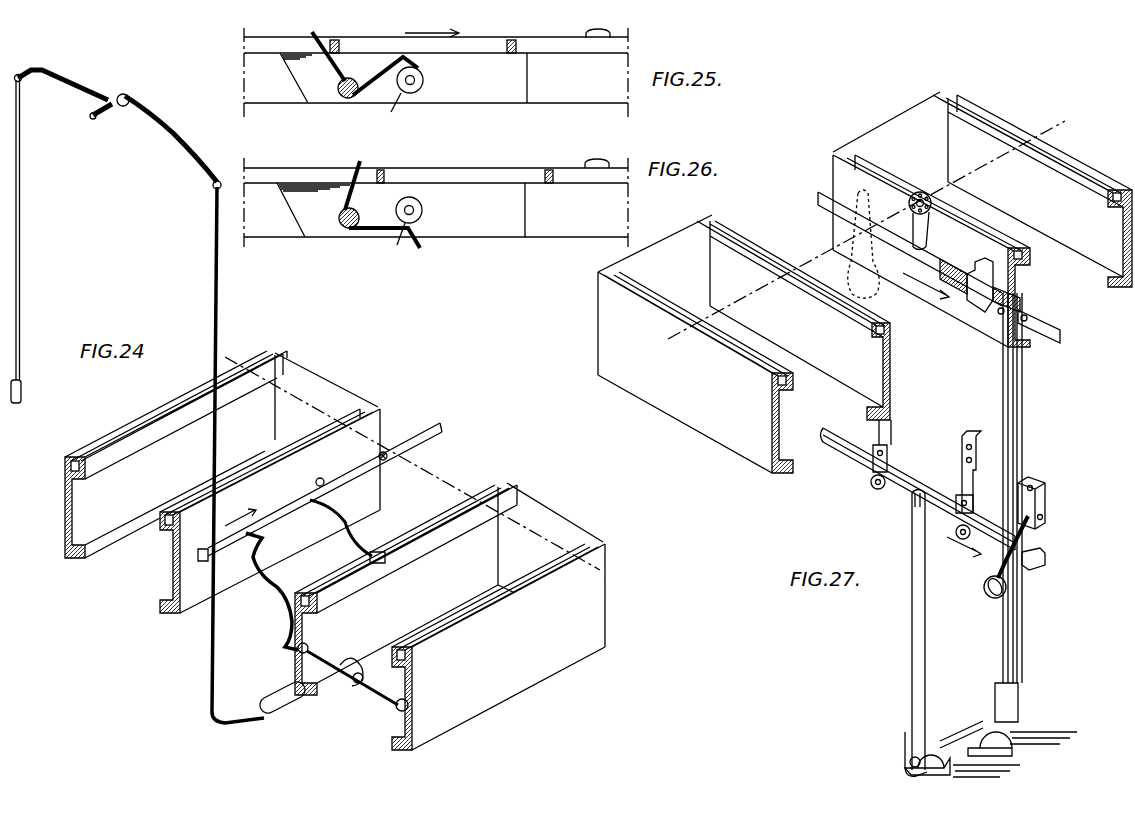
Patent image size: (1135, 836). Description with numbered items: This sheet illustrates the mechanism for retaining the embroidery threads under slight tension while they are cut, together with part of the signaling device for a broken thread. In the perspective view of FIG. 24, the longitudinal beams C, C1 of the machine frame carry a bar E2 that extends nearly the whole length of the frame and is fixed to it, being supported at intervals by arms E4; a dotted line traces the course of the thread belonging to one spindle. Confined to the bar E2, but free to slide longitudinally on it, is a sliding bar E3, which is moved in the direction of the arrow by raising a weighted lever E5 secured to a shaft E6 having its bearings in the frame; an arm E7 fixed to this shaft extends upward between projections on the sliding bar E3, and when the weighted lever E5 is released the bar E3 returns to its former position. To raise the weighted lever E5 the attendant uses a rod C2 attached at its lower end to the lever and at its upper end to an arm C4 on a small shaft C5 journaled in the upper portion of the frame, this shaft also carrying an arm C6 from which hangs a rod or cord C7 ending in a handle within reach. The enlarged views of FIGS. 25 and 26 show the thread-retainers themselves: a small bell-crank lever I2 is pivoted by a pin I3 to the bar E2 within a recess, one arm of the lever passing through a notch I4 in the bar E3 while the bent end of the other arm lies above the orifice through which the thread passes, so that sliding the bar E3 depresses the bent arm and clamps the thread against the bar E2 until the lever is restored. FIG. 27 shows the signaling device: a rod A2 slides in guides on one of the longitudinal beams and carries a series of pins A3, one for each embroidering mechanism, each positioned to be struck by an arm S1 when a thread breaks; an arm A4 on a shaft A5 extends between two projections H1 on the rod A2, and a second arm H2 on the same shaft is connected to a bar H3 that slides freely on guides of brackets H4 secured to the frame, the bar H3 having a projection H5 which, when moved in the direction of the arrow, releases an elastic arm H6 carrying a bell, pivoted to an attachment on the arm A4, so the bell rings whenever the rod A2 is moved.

In FIG. 24, the longitudinal beam C is at (450, 616).
In FIG. 27, the longitudinal beam C is at (900, 114).
In FIG. 24, the longitudinal beam C1 is at (222, 482).
In FIG. 27, the longitudinal beam C1 is at (672, 240).
In FIG. 24, the rod C2 is at (238, 452).
In FIG. 24, the arm C4 is at (171, 139).
In FIG. 24, the small shaft C5 is at (109, 115).
In FIG. 24, the arm C6 is at (63, 85).
In FIG. 24, the rod or cord C7 is at (26, 239).
In FIG. 25, the bar E2 is at (436, 82).
In FIG. 26, the bar E2 is at (436, 214).
In FIG. 24, the bar E2 is at (200, 552).
In FIG. 25, the sliding bar E3 is at (542, 52).
In FIG. 26, the sliding bar E3 is at (436, 167).
In FIG. 24, the sliding bar E3 is at (304, 503).
In FIG. 24, the arm E4 is at (347, 534).
In FIG. 24, the weighted lever E5 is at (283, 701).
In FIG. 24, the shaft E6 is at (378, 685).
In FIG. 24, the arm E7 is at (277, 593).
In FIG. 25, the bell-crank lever I2 is at (350, 57).
In FIG. 26, the bell-crank lever I2 is at (390, 220).
In FIG. 25, the pin I3 is at (350, 101).
In FIG. 26, the pin I3 is at (349, 229).
In FIG. 25, the notch I4 is at (323, 47).
In FIG. 27, the arm S1 is at (913, 215).
In FIG. 27, the rod A2 is at (919, 253).
In FIG. 27, the pin A3 is at (929, 235).
In FIG. 27, the arm A4 is at (1019, 507).
In FIG. 27, the shaft A5 is at (967, 742).
In FIG. 27, the projection H1 is at (1028, 320).
In FIG. 27, the arm H2 is at (905, 633).
In FIG. 27, the bar H3 is at (918, 489).
In FIG. 27, the bracket H4 is at (891, 420).
In FIG. 27, the projection H5 is at (1028, 543).
In FIG. 27, the elastic arm H6 is at (1013, 571).